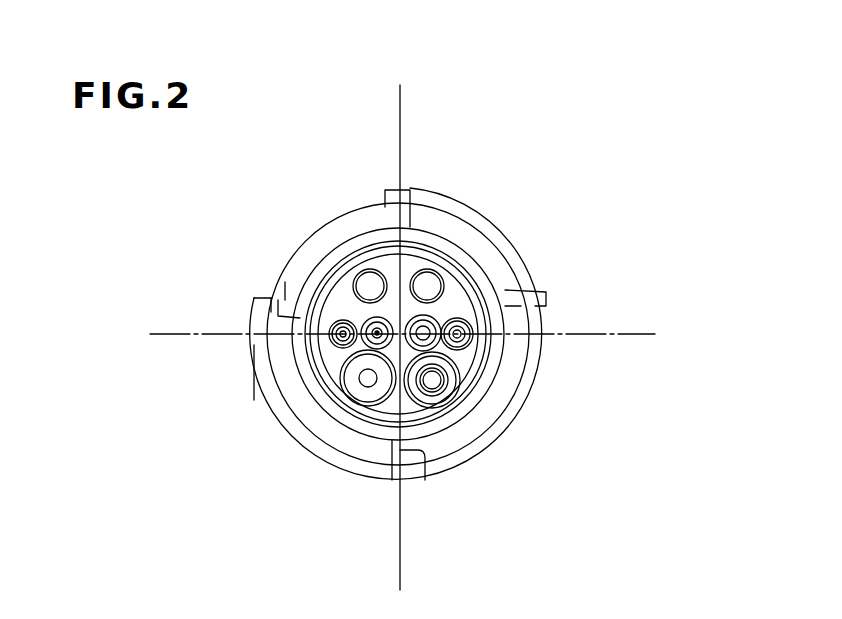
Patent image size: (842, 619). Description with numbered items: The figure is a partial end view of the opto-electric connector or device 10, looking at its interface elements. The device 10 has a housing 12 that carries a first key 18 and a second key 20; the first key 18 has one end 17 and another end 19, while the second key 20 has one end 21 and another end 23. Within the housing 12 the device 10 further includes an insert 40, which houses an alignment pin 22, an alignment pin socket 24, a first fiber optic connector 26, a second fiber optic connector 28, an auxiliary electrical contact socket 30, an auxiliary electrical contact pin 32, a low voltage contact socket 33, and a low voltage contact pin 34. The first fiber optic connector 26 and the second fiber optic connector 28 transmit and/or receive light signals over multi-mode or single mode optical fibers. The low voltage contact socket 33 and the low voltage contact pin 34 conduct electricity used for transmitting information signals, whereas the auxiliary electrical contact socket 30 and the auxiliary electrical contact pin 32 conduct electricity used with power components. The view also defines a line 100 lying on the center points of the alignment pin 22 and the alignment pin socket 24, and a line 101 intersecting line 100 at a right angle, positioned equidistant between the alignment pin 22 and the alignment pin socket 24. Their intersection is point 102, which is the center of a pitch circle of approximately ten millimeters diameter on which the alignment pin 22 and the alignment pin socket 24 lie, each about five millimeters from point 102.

The opto-electric connector 10 is at (634, 80).
The housing 12 is at (522, 390).
The one end of the first key 17 is at (421, 456).
The first key 18 is at (257, 382).
The another end of the first key 19 is at (268, 298).
The second key 20 is at (513, 232).
The one end of the second key 21 is at (385, 207).
The alignment pin 22 is at (328, 380).
The another end of the second key 23 is at (538, 303).
The alignment pin socket 24 is at (517, 283).
The first fiber optic connector 26 is at (338, 300).
The second fiber optic connector 28 is at (427, 282).
The auxiliary electrical contact socket 30 is at (371, 395).
The auxiliary electrical contact pin 32 is at (457, 387).
The low voltage contact socket 33 is at (443, 317).
The low voltage contact pin 34 is at (352, 313).
The insert 40 is at (330, 330).
The line 100 is at (160, 334).
The line 101 is at (405, 85).
The point 102 is at (369, 278).